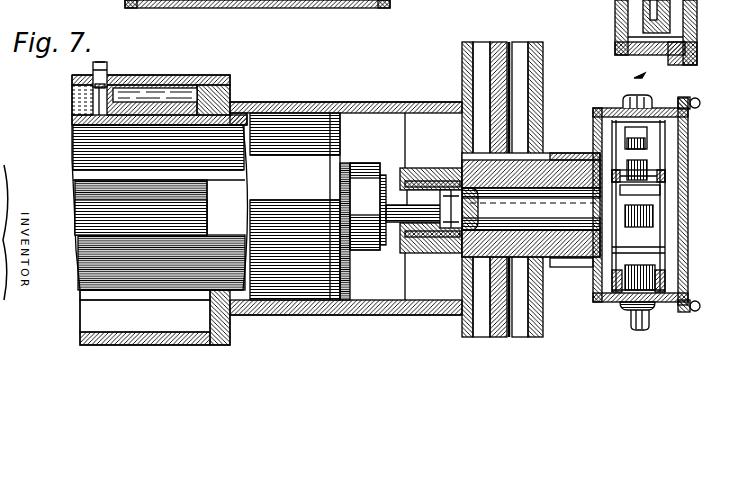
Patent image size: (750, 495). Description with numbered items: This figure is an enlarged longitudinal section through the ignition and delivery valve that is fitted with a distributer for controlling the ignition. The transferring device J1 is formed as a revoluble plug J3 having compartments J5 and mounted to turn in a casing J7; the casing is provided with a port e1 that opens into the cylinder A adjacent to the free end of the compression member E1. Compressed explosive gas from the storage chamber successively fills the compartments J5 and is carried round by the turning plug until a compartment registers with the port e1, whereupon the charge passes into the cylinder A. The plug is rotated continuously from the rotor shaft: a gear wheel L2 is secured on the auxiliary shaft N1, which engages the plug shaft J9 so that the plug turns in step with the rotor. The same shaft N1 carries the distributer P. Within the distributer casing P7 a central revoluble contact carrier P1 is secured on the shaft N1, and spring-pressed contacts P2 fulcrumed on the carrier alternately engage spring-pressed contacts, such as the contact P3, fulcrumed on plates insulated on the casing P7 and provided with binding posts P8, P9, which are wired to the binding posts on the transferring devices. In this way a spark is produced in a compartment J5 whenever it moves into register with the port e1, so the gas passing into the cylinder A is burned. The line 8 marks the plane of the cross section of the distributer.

The cylinder A is at (251, 3).
The transferring device J1 is at (177, 88).
The revoluble plug J3 is at (78, 160).
The compartment J5 is at (78, 213).
The casing J7 is at (295, 206).
The plug shaft J9 is at (388, 198).
The gear wheel L2 is at (499, 42).
The auxiliary shaft N1 is at (515, 203).
The distributer P is at (633, 204).
The contact carrier P1 is at (665, 178).
The spring-pressed contact P2 is at (645, 160).
The spring-pressed contact P3 is at (640, 262).
The distributer casing P7 is at (598, 285).
The binding post P8 is at (630, 314).
The binding post P9 is at (630, 102).
The section line 8— 8 is at (651, 90).
The compression member E1 is at (135, 330).
The port e1 is at (182, 290).